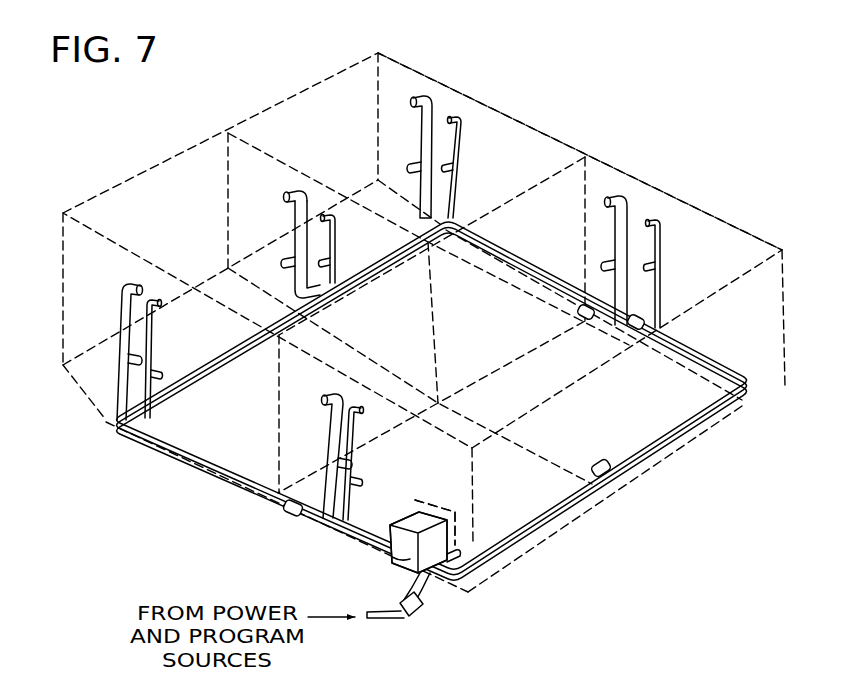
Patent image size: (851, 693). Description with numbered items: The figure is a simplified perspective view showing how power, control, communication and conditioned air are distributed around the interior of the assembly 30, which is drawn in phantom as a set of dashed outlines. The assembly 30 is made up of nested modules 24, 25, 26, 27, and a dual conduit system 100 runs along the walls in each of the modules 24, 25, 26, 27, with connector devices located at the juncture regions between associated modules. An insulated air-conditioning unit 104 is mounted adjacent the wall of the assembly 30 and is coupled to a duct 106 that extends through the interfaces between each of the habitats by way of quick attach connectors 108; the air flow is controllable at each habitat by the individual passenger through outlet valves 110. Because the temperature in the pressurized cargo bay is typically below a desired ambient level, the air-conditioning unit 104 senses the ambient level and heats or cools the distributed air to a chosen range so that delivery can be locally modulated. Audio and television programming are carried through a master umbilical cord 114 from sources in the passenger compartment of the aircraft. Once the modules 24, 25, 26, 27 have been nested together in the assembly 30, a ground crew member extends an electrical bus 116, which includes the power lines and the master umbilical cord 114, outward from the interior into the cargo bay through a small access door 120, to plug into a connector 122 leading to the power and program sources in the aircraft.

The module 24 is at (63, 257).
The module 25 is at (333, 540).
The module 26 is at (413, 70).
The module 27 is at (783, 278).
The assembly 30 is at (233, 507).
The dual conduit system 100 is at (722, 424).
The air-conditioning unit 104 is at (403, 545).
The duct 106 is at (690, 430).
The quick attach connector 108 is at (287, 512).
The outlet valve 110 is at (418, 95).
The master umbilical cord 114 is at (190, 452).
The electrical bus 116 is at (432, 592).
The access door 120 is at (430, 498).
The connector 122 is at (420, 612).